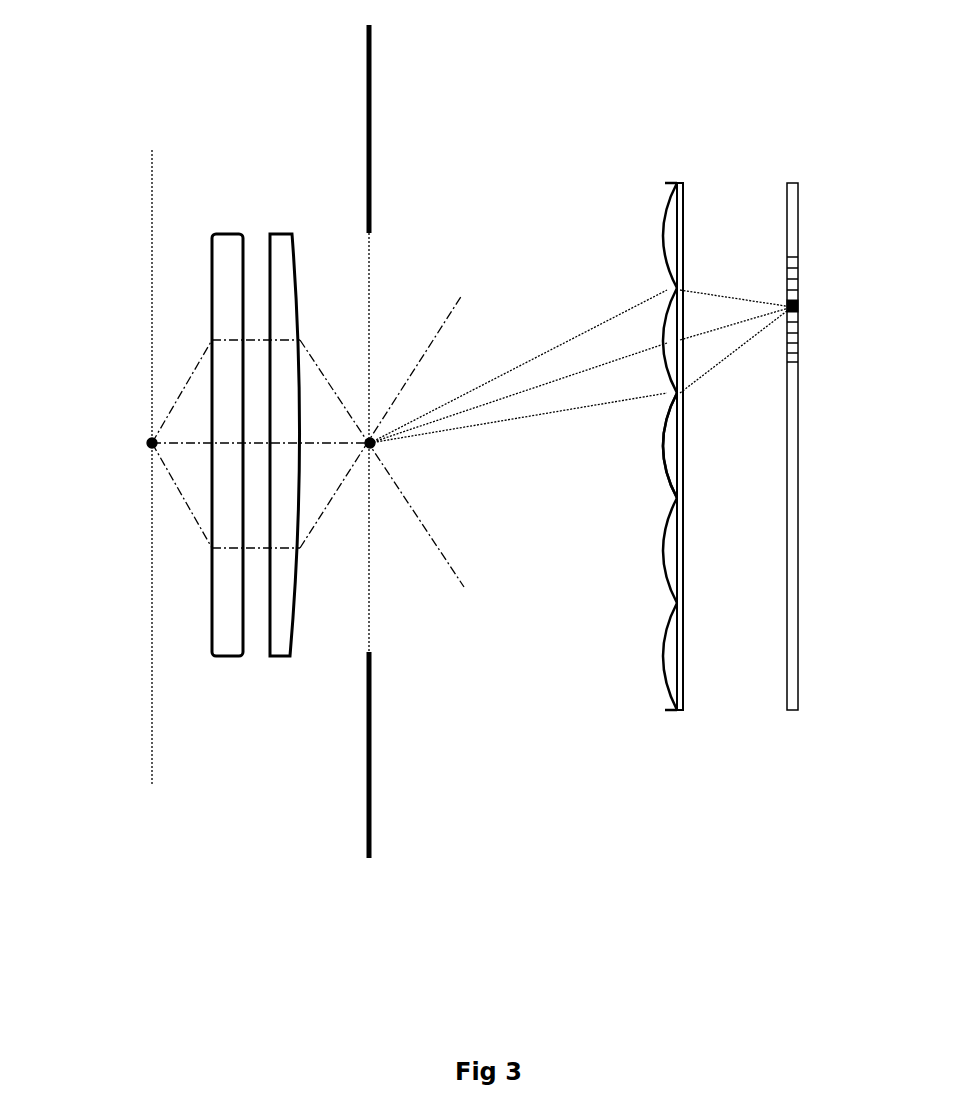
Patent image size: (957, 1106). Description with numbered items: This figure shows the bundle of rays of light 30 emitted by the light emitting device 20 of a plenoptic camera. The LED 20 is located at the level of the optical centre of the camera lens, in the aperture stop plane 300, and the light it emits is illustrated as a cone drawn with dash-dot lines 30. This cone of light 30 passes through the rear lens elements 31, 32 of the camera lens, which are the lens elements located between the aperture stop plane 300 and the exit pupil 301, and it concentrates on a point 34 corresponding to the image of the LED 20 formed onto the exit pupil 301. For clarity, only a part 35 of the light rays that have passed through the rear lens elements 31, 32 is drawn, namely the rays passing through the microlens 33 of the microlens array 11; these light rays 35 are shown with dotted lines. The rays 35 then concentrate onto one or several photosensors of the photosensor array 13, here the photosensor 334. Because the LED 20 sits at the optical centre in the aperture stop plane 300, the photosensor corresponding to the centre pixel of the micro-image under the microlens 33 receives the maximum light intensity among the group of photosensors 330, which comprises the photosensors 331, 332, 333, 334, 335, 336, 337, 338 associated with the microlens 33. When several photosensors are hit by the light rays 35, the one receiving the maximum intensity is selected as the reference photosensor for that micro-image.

The aperture stop plane 300 is at (148, 220).
The light emitting device 20 is at (152, 440).
The bundle of rays of light 30 is at (197, 370).
The rear lens element 31 is at (228, 236).
The rear lens element 32 is at (282, 236).
The exit pupil 301 is at (372, 250).
The point 34 is at (372, 448).
The light rays 35 is at (473, 427).
The microlens array 11 is at (668, 182).
The microlens 33 is at (660, 380).
The photosensor array 13 is at (793, 182).
The group of photosensors 330 is at (787, 262).
The photosensor 331 is at (787, 275).
The photosensor 332 is at (793, 282).
The photosensor 333 is at (795, 298).
The photosensor 334 is at (798, 307).
The photosensor 335 is at (798, 322).
The photosensor 336 is at (798, 335).
The photosensor 337 is at (788, 345).
The photosensor 338 is at (788, 360).